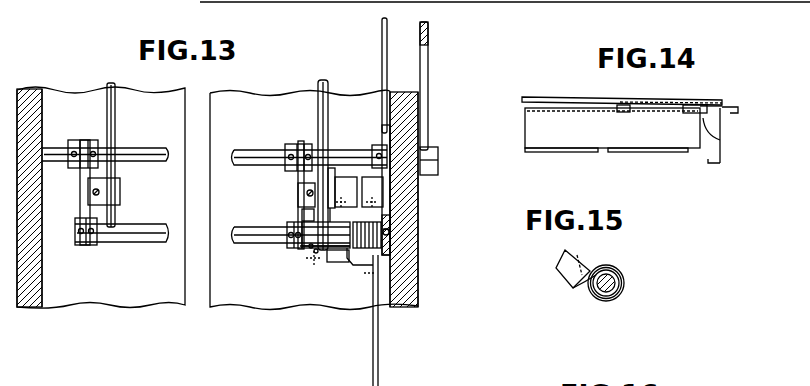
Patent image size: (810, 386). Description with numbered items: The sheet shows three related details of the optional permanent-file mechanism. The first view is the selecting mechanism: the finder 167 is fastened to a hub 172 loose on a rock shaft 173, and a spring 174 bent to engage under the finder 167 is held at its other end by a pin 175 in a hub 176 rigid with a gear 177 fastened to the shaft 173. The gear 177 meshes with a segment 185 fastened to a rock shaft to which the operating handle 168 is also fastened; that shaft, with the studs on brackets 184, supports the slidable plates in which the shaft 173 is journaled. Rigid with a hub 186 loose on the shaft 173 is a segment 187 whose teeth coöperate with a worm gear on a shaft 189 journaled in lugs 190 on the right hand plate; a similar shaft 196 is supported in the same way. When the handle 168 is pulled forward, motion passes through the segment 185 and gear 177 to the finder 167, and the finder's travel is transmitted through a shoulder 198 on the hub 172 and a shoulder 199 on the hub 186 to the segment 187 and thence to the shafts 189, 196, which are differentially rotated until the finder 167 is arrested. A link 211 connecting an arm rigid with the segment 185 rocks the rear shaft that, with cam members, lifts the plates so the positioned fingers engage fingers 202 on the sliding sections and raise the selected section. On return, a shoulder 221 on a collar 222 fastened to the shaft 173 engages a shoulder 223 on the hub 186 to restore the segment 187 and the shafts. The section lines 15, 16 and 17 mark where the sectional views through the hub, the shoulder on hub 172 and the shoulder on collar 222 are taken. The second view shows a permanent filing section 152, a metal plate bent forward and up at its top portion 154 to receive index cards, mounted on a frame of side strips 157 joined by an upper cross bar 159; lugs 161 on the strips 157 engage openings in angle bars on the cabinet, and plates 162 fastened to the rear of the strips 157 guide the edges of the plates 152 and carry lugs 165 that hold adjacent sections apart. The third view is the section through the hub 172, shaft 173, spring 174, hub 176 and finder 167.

In FIG. 13, the section line 15— 15 is at (371, 237).
In FIG. 13, the section line 16— 16 is at (342, 230).
In FIG. 13, the section line 17— 17 is at (313, 246).
In FIG. 14, the permanent filing section 152 is at (716, 124).
In FIG. 14, the bent top portion 154 is at (575, 148).
In FIG. 14, the strip 157 is at (720, 106).
In FIG. 14, the upper cross bar 159 is at (550, 101).
In FIG. 14, the lug 161 is at (738, 110).
In FIG. 14, the plate 162 is at (722, 122).
In FIG. 14, the lug 165 is at (722, 158).
In FIG. 13, the finder 167 is at (379, 340).
In FIG. 13, the operating handle 168 is at (426, 70).
In FIG. 13, the hub 172 is at (378, 150).
In FIG. 15, the hub 172 is at (596, 290).
In FIG. 13, the rock shaft 173 is at (236, 228).
In FIG. 15, the rock shaft 173 is at (612, 297).
In FIG. 13, the spring 174 is at (366, 220).
In FIG. 15, the spring 174 is at (582, 286).
In FIG. 13, the pin 175 is at (388, 230).
In FIG. 13, the hub 176 is at (388, 225).
In FIG. 15, the hub 176 is at (616, 282).
In FIG. 13, the gear 177 is at (390, 240).
In FIG. 13, the bracket 184 is at (122, 187).
In FIG. 13, the segment 185 is at (417, 187).
In FIG. 13, the hub 186 is at (333, 250).
In FIG. 13, the segment 187 is at (332, 190).
In FIG. 13, the shaft 189 is at (328, 88).
In FIG. 13, the lug 190 is at (115, 225).
In FIG. 13, the shaft 196 is at (115, 118).
In FIG. 13, the shoulder 198 is at (345, 265).
In FIG. 13, the shoulder 199 is at (336, 215).
In FIG. 14, the finger 202 is at (619, 107).
In FIG. 13, the link 211 is at (382, 42).
In FIG. 13, the shoulder 221 is at (312, 232).
In FIG. 13, the collar 222 is at (310, 247).
In FIG. 13, the shoulder 223 is at (315, 253).